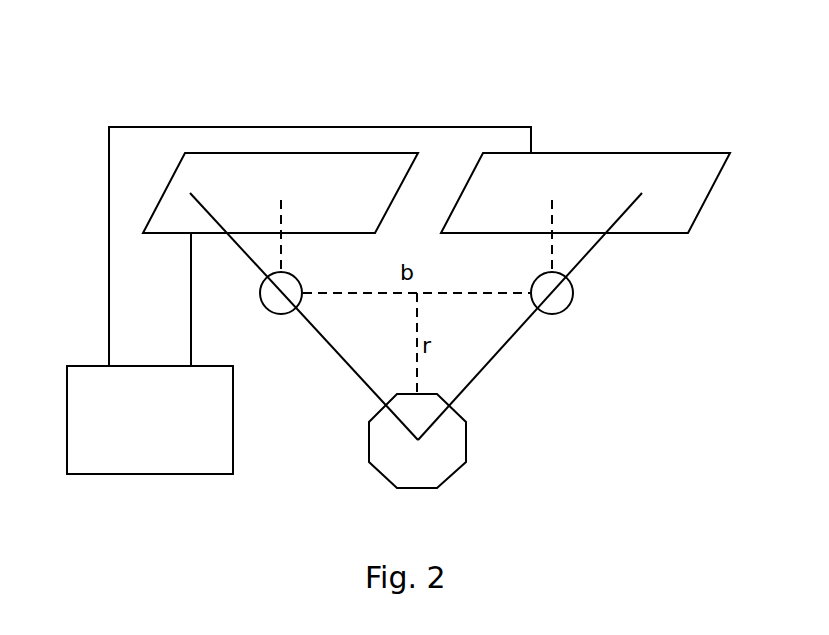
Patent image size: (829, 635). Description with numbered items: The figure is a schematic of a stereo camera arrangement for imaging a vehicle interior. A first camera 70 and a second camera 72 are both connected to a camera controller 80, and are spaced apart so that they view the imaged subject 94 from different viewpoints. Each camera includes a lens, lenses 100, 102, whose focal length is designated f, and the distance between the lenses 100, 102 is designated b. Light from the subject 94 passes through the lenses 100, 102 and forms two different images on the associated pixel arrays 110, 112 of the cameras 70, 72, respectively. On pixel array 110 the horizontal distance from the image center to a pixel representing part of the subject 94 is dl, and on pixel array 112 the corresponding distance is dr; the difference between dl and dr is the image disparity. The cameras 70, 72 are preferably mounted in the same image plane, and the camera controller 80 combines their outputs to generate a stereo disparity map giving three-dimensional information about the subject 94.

The first camera 70 is at (235, 236).
The second camera 72 is at (574, 234).
The pixel array 110 is at (162, 190).
The pixel array 112 is at (585, 153).
The camera lens 100 is at (277, 315).
The camera lens 102 is at (553, 313).
The camera controller 80 is at (242, 409).
The subject 94 is at (468, 420).